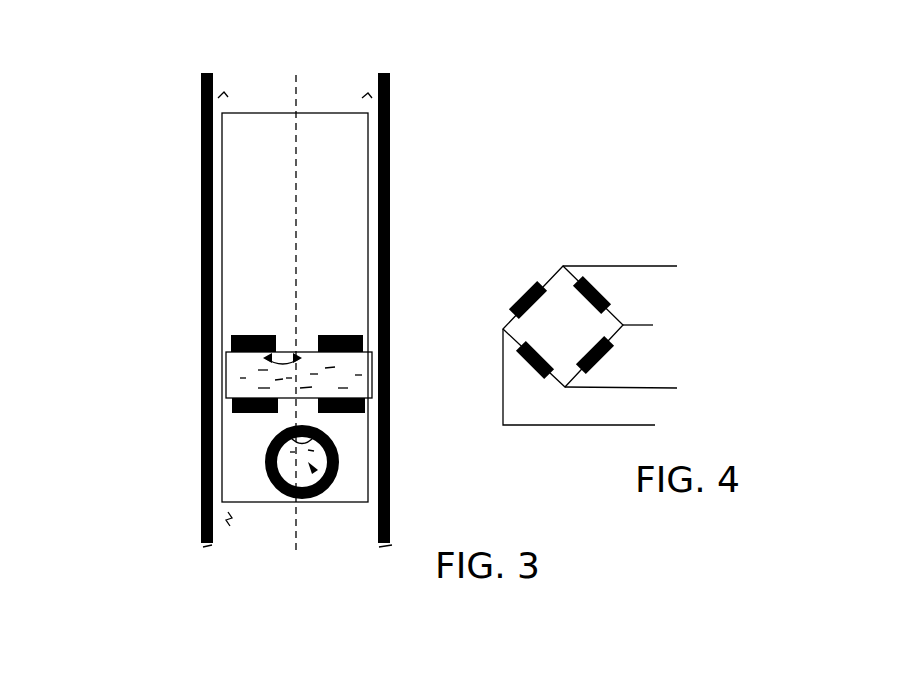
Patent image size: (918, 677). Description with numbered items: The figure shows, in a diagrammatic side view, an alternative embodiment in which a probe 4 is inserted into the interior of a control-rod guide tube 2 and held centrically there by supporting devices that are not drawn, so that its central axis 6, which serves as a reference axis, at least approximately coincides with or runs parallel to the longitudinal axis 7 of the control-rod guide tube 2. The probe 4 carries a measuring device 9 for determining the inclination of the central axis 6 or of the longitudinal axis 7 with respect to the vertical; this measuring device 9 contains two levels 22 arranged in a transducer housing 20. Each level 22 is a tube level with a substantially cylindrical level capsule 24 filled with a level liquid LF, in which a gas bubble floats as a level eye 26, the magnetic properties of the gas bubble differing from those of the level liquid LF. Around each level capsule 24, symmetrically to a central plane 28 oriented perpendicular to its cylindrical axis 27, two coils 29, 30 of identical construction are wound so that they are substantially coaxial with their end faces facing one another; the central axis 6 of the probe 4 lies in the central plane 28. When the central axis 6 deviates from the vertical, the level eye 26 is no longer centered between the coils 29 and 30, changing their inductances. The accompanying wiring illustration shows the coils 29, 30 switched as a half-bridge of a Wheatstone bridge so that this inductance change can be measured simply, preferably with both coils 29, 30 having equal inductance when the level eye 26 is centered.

In FIG. 3, the control-rod guide tube 2 is at (261, 310).
In FIG. 3, the probe 4 is at (388, 232).
In FIG. 3, the central axis 6 is at (380, 285).
In FIG. 3, the longitudinal axis 7 is at (380, 285).
In FIG. 3, the measuring device 9 is at (348, 182).
In FIG. 3, the transducer housing 20 is at (144, 308).
In FIG. 3, the level 22 is at (350, 377).
In FIG. 3, the level capsule 24 is at (226, 439).
In FIG. 3, the level eye 26 is at (271, 407).
In FIG. 3, the cylindrical axis 27 is at (226, 375).
In FIG. 3, the central plane 28 is at (380, 285).
In FIG. 3, the coil 29 is at (366, 404).
In FIG. 4, the coil 29 is at (542, 304).
In FIG. 3, the coil 30 is at (280, 406).
In FIG. 4, the coil 30 is at (540, 352).
In FIG. 3, the level liquid LF is at (264, 305).